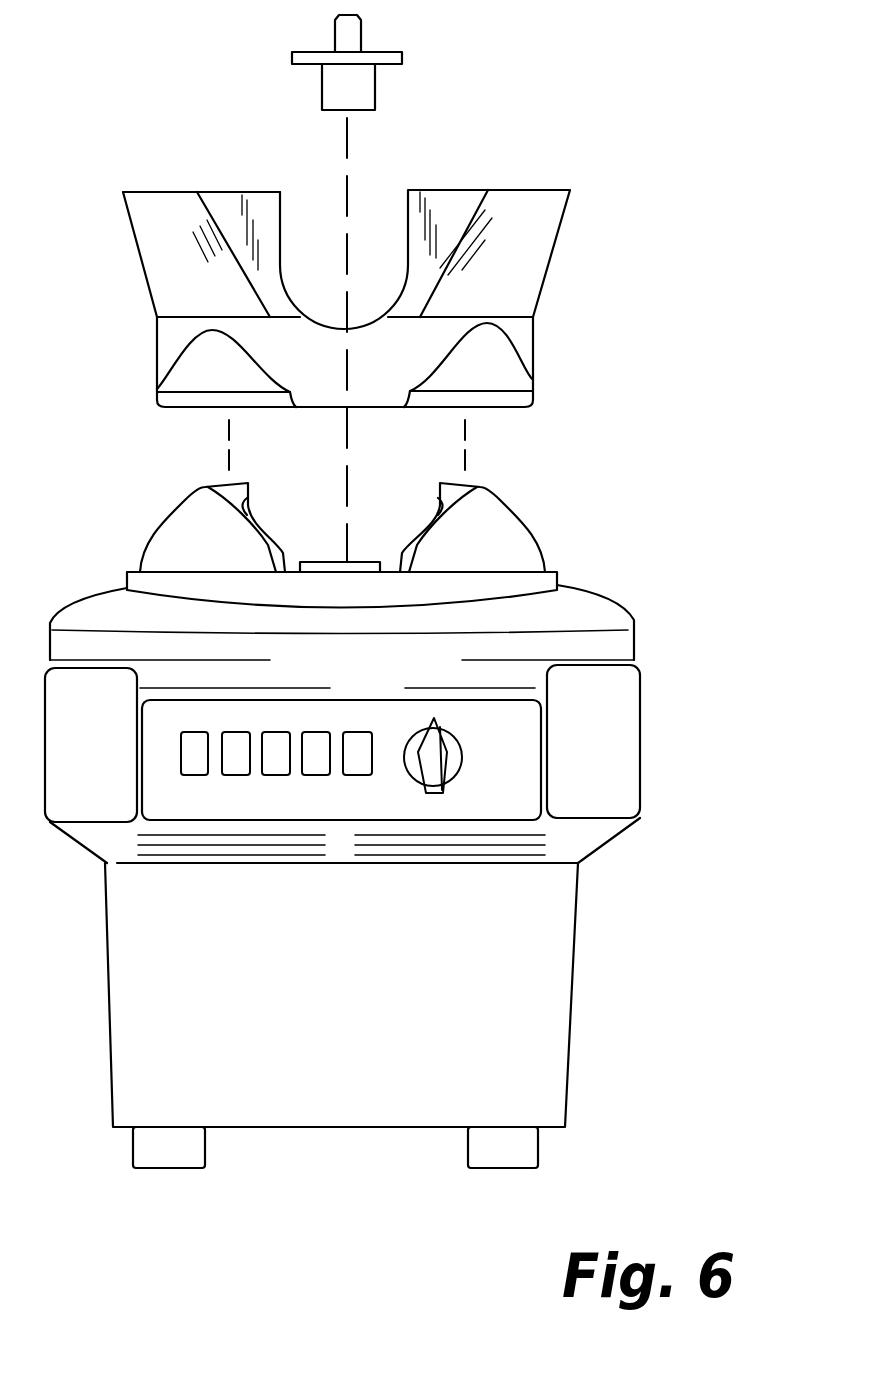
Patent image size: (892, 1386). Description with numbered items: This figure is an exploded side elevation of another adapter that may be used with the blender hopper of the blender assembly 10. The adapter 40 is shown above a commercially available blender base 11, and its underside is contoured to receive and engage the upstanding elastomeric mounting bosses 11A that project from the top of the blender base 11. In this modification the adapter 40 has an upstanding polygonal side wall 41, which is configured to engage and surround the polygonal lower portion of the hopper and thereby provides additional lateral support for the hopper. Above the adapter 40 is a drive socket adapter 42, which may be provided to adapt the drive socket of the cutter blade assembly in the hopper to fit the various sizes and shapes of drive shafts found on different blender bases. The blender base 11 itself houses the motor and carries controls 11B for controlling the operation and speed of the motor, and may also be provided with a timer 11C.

The blender assembly 10 is at (735, 453).
The blender base 11 is at (340, 978).
The elastomeric mounting bosses 11A is at (190, 518).
The controls 11B is at (390, 777).
The timer 11C is at (452, 757).
The adapter 40 is at (560, 238).
The upstanding polygonal side wall 41 is at (150, 262).
The drive socket adapter 42 is at (370, 80).